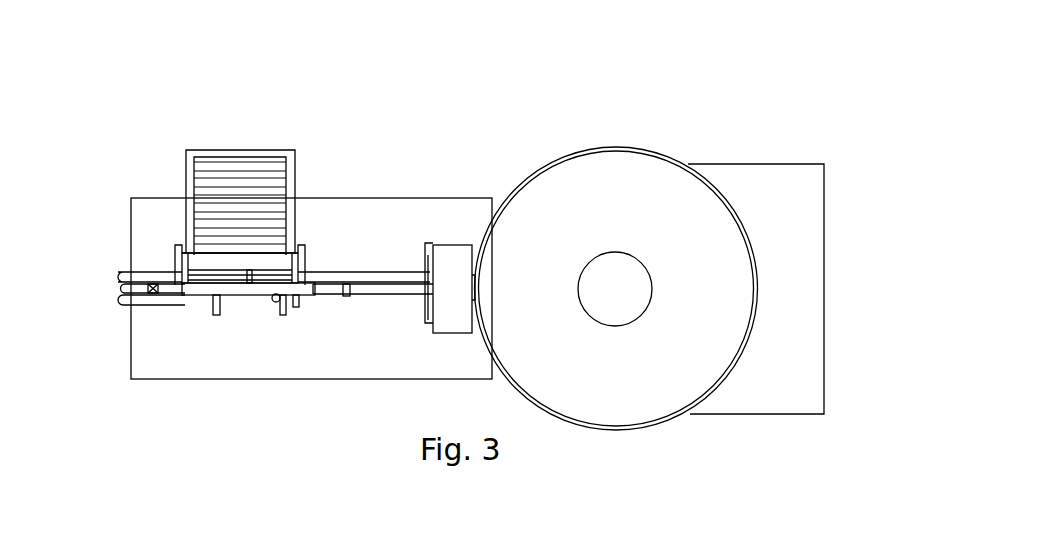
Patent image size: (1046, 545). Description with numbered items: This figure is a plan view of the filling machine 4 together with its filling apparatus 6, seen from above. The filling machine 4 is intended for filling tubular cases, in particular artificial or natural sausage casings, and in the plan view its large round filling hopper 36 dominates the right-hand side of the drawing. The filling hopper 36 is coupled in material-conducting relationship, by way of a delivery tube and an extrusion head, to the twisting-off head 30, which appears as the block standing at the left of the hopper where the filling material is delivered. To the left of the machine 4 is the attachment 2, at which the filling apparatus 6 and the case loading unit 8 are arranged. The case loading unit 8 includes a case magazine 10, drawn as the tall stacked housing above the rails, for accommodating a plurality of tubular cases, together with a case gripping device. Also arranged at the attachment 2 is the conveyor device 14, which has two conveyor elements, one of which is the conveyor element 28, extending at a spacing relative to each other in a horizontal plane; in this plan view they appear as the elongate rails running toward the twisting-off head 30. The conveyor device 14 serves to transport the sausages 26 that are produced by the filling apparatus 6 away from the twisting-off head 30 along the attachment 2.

The attachment 2 is at (175, 104).
The filling machine 4 is at (702, 123).
The filling apparatus 6 is at (366, 315).
The case loading unit 8 is at (289, 318).
The case magazine 10 is at (242, 197).
The conveyor device 14 is at (178, 318).
The sausages 26 is at (132, 290).
The conveyor element 28 is at (155, 300).
The twisting-off head 30 is at (457, 285).
The filling hopper 36 is at (613, 147).